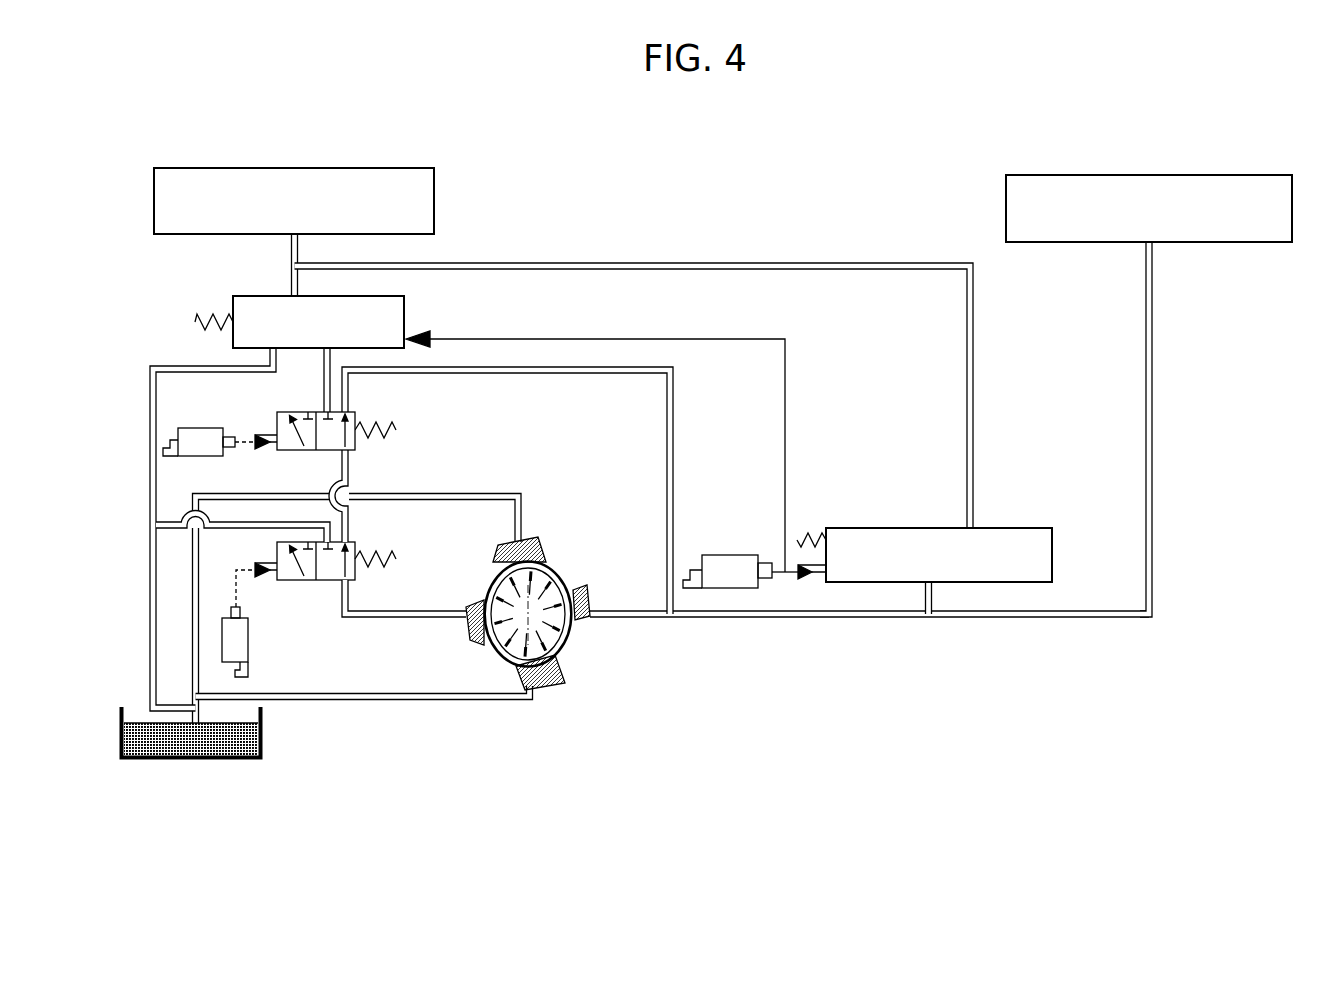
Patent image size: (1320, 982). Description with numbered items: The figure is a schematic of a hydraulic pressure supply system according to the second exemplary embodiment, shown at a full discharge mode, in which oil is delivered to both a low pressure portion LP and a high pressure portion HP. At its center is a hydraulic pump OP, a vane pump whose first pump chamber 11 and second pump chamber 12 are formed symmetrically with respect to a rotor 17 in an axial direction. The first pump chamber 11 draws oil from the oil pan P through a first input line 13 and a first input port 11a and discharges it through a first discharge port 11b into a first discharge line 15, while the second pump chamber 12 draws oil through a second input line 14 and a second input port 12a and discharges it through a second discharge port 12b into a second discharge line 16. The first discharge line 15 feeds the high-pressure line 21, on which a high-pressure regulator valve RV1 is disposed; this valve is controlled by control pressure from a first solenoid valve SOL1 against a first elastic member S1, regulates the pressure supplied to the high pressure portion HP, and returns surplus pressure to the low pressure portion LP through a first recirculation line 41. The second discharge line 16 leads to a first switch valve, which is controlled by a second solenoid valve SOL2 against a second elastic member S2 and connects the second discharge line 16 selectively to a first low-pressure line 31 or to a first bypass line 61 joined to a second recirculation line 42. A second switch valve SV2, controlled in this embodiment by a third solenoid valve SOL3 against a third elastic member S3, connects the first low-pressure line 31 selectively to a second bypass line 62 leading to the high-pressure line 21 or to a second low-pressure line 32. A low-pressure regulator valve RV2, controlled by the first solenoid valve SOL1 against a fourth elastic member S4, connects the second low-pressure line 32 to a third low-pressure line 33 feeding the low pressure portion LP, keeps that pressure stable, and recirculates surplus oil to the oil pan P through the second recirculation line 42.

The low pressure portion LP is at (292, 168).
The high pressure portion HP is at (1147, 175).
The third low-pressure line 33 is at (291, 262).
The first recirculation line 41 is at (812, 263).
The fourth elastic member S4 is at (195, 318).
The low-pressure regulator valve RV2 is at (404, 310).
The second recirculation line 42 is at (150, 379).
The third solenoid valve SOL3 is at (200, 428).
The second low-pressure line 32 is at (324, 391).
The third elastic member S3 is at (383, 422).
The second switch valve SV2 is at (372, 448).
The first input line 13 is at (490, 493).
The second bypass line 62 is at (673, 410).
The first low-pressure line 31 is at (349, 470).
The first pump chamber 11 is at (550, 572).
The first input port 11a is at (535, 545).
The first discharge port 11b is at (588, 597).
The second pump chamber 12 is at (507, 662).
The second input port 12a is at (550, 673).
The second discharge port 12b is at (472, 637).
The rotor 17 is at (518, 607).
The second elastic member S2 is at (383, 550).
The first bypass line 61 is at (220, 528).
The second input line 14 is at (303, 588).
The second solenoid valve SOL2 is at (248, 651).
The second discharge line 16 is at (396, 618).
The first discharge line 15 is at (645, 618).
The high-pressure line 21 is at (1032, 620).
The first solenoid valve SOL1 is at (728, 555).
The first elastic member S1 is at (810, 530).
The high-pressure regulator valve RV1 is at (1022, 528).
The oil pan P is at (263, 733).
The hydraulic pump OP is at (534, 616).